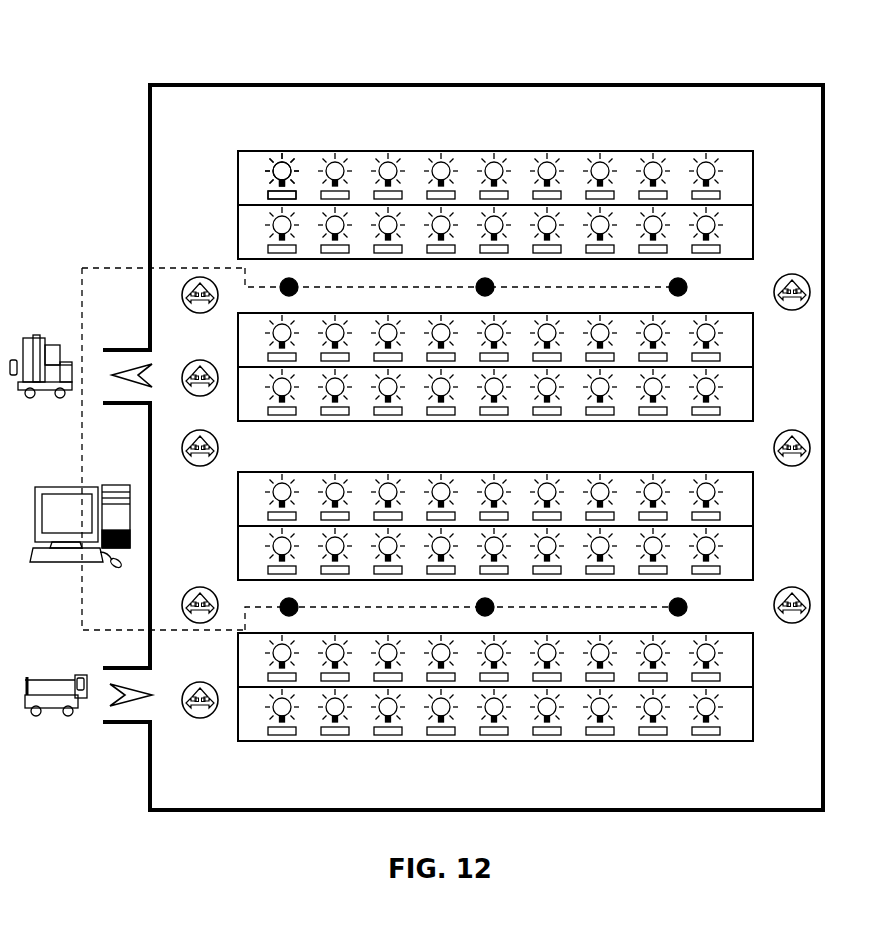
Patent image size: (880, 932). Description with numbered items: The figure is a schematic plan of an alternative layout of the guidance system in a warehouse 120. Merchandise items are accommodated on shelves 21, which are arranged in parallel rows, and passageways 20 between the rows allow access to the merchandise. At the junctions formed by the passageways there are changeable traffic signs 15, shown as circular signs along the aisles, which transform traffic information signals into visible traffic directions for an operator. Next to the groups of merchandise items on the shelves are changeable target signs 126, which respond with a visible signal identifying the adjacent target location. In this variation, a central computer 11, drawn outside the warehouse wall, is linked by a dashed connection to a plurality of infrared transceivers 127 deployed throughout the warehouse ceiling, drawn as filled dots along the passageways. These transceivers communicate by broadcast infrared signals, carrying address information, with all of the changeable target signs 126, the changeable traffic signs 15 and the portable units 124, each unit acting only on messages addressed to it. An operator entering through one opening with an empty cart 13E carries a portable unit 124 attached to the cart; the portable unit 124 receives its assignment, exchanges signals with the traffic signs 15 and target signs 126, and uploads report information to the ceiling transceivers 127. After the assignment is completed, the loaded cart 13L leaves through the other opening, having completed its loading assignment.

The warehouse 120 is at (90, 72).
The passageways 20 is at (690, 130).
The shelves 21 is at (756, 197).
The changeable target sign 126 is at (283, 160).
The infrared transceiver 127 is at (686, 293).
The changeable traffic sign 15 is at (192, 467).
The central computer 11 is at (36, 485).
The loaded cart 13L is at (42, 330).
The empty cart 13E is at (52, 738).
The portable unit 124 is at (13, 376).